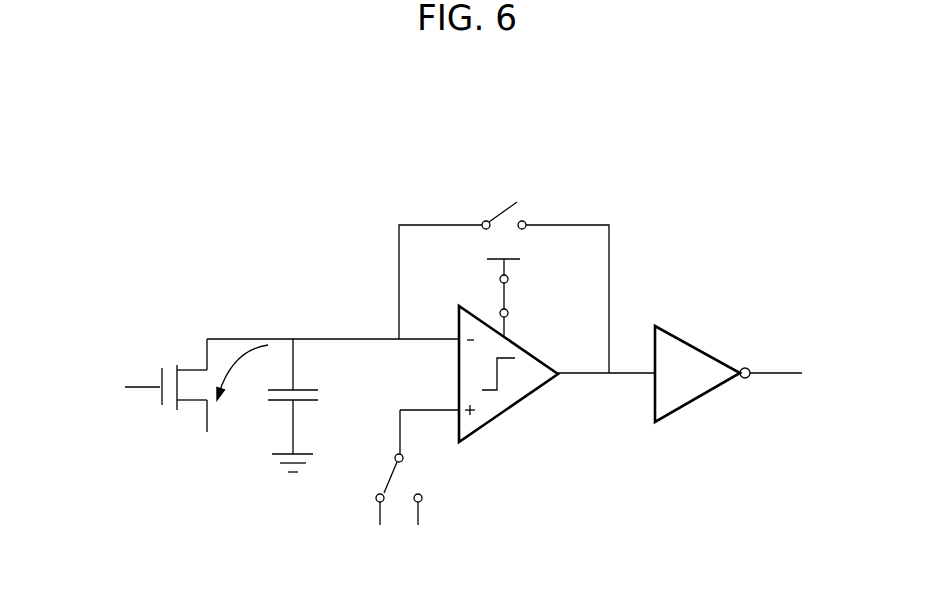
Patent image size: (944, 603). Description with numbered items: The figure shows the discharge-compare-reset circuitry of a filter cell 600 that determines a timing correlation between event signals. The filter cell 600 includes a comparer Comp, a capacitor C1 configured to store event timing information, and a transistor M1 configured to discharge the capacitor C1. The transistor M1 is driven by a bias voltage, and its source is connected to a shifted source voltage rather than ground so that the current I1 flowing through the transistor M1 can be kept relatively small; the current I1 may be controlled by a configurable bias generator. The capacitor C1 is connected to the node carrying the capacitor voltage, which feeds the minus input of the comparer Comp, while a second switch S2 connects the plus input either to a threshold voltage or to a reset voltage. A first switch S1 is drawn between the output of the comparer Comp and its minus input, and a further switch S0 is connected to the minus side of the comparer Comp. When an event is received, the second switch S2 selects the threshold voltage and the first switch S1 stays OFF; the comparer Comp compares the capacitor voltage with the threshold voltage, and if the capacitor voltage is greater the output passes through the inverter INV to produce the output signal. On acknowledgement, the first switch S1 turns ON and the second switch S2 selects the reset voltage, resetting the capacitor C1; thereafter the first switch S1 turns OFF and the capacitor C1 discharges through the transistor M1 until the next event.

The filter cell 600 is at (498, 131).
The transistor M1 is at (166, 380).
The capacitor C1 is at (310, 405).
The current I1 is at (242, 372).
The first switch S1 is at (504, 278).
The reset switch S0 is at (493, 298).
The second switch S2 is at (392, 483).
The comparer Comp is at (479, 380).
The inverter INV is at (728, 374).